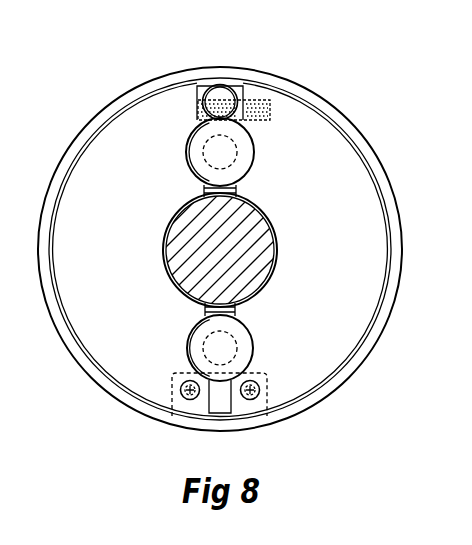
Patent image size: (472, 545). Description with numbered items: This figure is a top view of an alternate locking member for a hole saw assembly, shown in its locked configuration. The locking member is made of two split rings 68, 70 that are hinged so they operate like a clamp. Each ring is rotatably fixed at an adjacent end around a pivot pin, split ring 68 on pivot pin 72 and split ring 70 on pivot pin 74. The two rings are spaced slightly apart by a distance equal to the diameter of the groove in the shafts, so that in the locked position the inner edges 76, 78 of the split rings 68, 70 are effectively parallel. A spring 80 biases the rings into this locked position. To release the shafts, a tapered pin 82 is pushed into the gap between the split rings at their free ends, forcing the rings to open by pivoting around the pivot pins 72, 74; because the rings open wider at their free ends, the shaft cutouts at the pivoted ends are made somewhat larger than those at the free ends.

The split ring 68 is at (343, 258).
The split ring 70 is at (128, 258).
The pivot pin 72 is at (250, 391).
The pivot pin 74 is at (190, 391).
The inner edge 76 is at (203, 193).
The inner edge 78 is at (235, 313).
The spring 80 is at (270, 105).
The tapered pin 82 is at (221, 95).